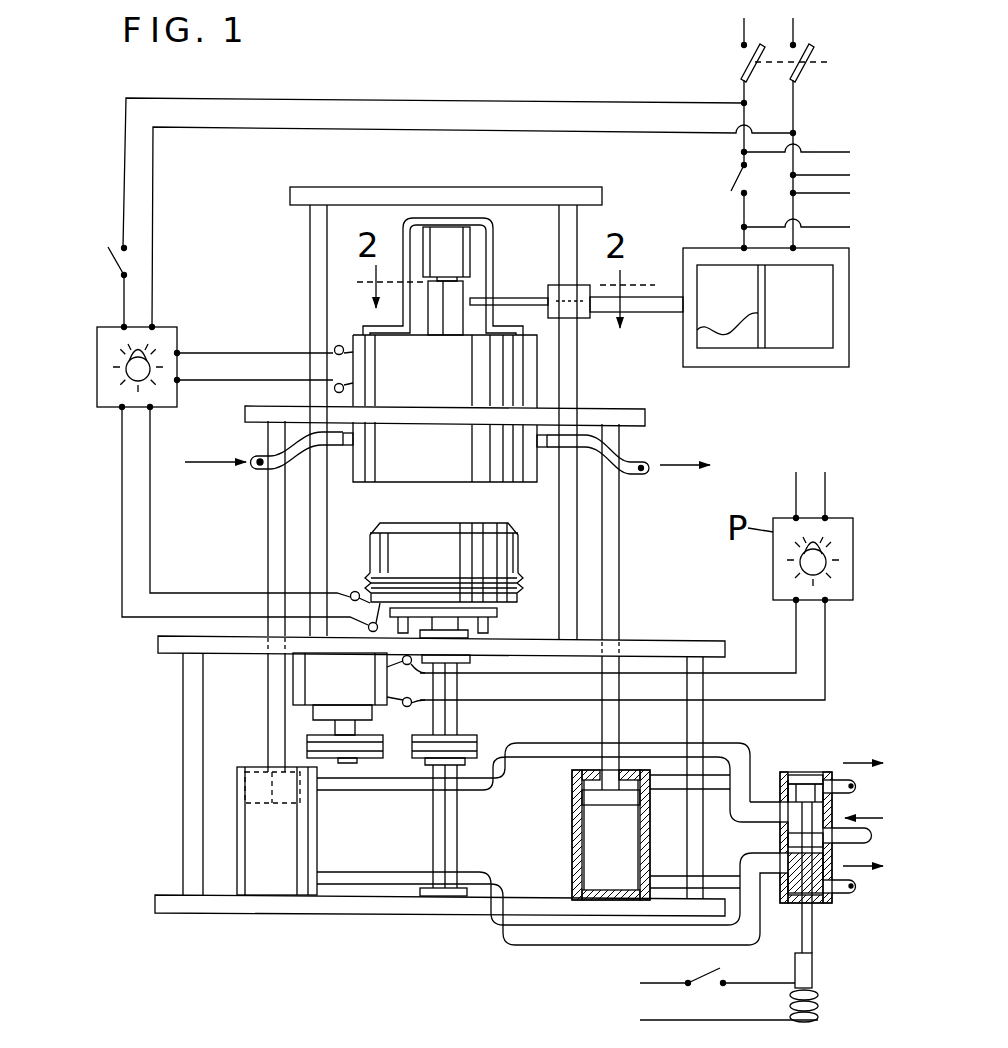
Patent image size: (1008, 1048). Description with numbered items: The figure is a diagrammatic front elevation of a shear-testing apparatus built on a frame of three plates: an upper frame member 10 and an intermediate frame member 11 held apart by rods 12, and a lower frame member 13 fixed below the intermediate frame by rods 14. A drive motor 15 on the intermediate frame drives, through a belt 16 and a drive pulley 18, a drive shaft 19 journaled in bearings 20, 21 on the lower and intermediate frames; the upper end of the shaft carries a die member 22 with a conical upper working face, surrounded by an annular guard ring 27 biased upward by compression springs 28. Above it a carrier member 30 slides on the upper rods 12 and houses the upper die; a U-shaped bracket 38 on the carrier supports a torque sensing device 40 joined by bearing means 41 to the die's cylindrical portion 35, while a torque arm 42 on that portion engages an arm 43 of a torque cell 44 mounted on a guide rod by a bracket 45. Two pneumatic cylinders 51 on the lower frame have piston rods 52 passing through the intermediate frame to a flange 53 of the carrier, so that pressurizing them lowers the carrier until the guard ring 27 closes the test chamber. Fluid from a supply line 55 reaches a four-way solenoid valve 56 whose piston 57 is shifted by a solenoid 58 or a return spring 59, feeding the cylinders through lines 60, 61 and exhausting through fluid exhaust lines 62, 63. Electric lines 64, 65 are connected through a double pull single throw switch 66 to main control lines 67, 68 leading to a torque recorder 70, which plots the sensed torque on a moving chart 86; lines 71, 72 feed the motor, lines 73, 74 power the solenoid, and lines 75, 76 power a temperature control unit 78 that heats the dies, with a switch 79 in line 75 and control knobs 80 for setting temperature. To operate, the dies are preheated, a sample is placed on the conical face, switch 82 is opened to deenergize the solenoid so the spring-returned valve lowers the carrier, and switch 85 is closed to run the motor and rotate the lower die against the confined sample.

The upper frame member 10 is at (290, 197).
The intermediate frame member 11 is at (158, 646).
The rods 12 is at (310, 320).
The lower frame member 13 is at (155, 902).
The rods 14 is at (183, 779).
The drive motor 15 is at (320, 688).
The belt 16 is at (399, 758).
The drive pulley 18 is at (470, 735).
The drive shaft 19 is at (457, 808).
The bearing 20 is at (442, 898).
The bearing 21 is at (492, 660).
The die member 22 is at (520, 607).
The annular guard ring 27 is at (440, 570).
The compression springs 28 is at (518, 585).
The carrier member 30 is at (546, 467).
The U-shaped bracket 38 is at (494, 236).
The torque sensing device 40 is at (440, 238).
The bearing means 41 is at (446, 284).
The torque arm 42 is at (500, 298).
The torque cell 44 is at (566, 318).
The pneumatic cylinders 51 is at (245, 860).
The piston rods 52 is at (268, 573).
The flange 53 is at (645, 419).
The supply line 55 is at (788, 835).
The solenoid valve 56 is at (818, 777).
The piston 57 is at (810, 786).
The solenoid 58 is at (805, 1030).
The return spring 59 is at (810, 905).
The line 60 is at (425, 790).
The line 61 is at (362, 882).
The fluid exhaust line 62 is at (835, 776).
The fluid exhaust line 63 is at (833, 895).
The electric line 64 is at (744, 30).
The electric line 65 is at (793, 32).
The double pull single throw switch 66 is at (830, 64).
The main control line 67 is at (744, 152).
The main control line 68 is at (800, 133).
The torque recorder 70 is at (770, 355).
The line 71 is at (850, 193).
The line 72 is at (850, 227).
The line 73 is at (848, 122).
The line 74 is at (850, 175).
The line 75 is at (305, 100).
The line 76 is at (296, 128).
The temperature control unit 78 is at (113, 396).
The switch 79 is at (110, 266).
The control knobs 80 is at (128, 369).
The switch 82 is at (697, 978).
The switch 85 is at (731, 187).
The moving chart 86 is at (778, 330).
The cylindrical portion 35 is at (125, 1047).
The arm 43 is at (491, 1039).
The bracket 45 is at (370, 1047).